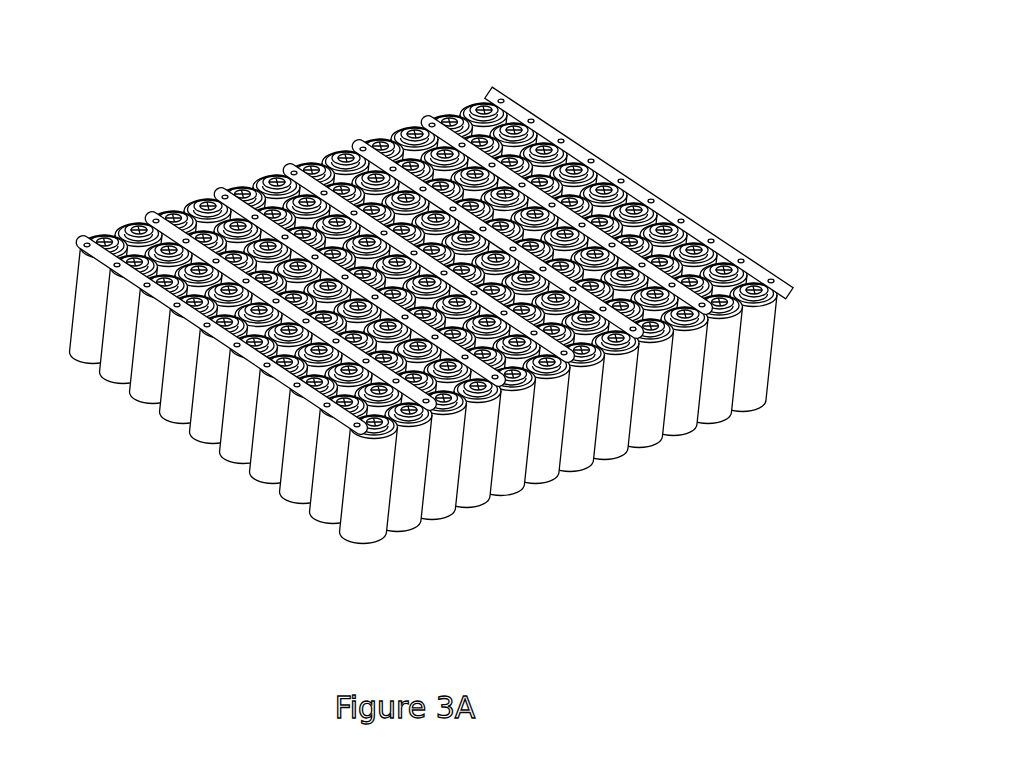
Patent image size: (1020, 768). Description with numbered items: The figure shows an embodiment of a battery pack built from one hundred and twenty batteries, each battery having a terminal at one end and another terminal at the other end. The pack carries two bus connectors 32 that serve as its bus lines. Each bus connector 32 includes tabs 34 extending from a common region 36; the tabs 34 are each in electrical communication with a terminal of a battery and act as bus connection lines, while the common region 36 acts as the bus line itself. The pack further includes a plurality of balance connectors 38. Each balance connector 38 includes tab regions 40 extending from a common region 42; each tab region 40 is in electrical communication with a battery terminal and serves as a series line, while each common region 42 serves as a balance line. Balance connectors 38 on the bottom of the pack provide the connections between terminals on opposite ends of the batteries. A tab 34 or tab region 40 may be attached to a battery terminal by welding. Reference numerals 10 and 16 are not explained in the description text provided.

The battery pack assembly 10 is at (437, 325).
The battery cell 16 is at (437, 325).
The bus connector 32 is at (71, 224).
The tab 34 is at (482, 112).
The common region 36 is at (412, 244).
The balance connector 38 is at (456, 342).
The tab region 40 is at (257, 175).
The common region 42 is at (221, 192).